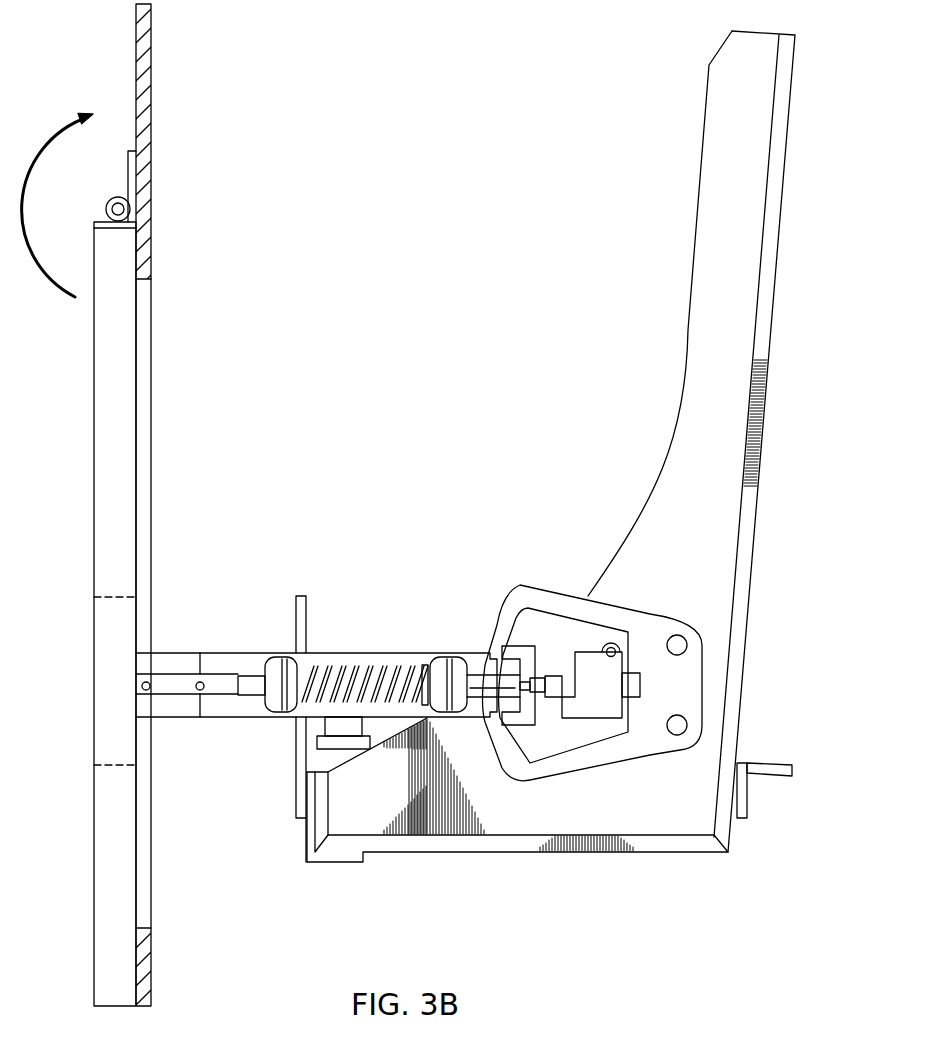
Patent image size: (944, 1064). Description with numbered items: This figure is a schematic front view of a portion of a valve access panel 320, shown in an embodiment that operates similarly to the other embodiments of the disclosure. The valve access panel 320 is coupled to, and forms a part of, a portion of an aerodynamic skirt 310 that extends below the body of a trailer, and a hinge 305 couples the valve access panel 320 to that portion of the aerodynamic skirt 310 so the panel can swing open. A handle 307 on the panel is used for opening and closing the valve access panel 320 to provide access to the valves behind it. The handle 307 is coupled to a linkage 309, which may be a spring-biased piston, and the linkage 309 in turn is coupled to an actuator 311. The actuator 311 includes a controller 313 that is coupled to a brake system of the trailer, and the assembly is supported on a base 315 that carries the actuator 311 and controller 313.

The hinge 305 is at (110, 199).
The handle 307 is at (96, 775).
The linkage 309 is at (226, 719).
The aerodynamic skirt 310 is at (135, 79).
The actuator 311 is at (485, 680).
The controller 313 is at (590, 720).
The base plate 315 is at (680, 852).
The valve access panel 320 is at (93, 421).